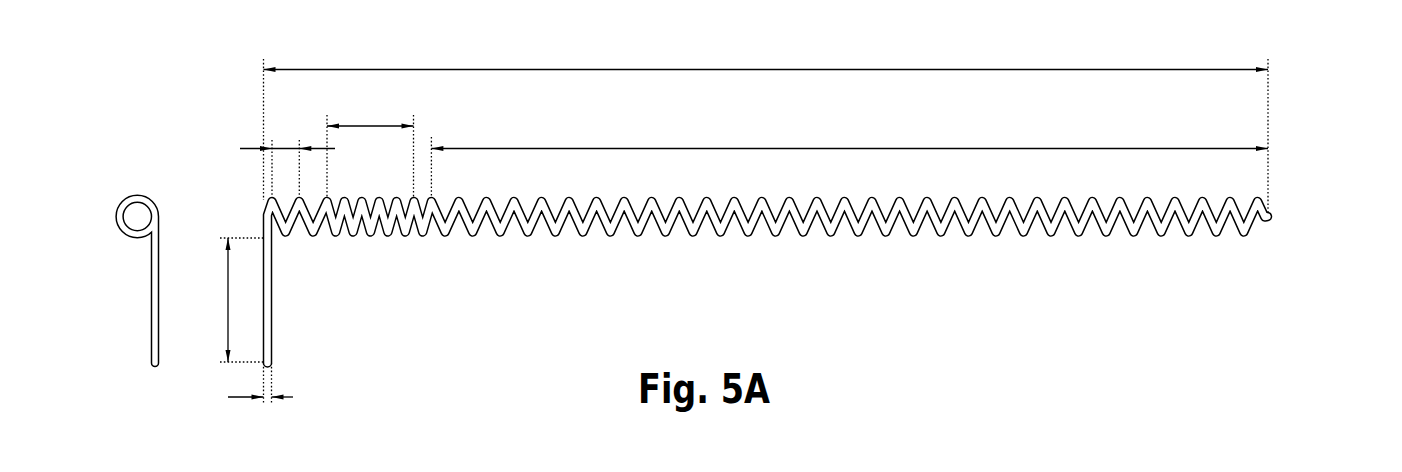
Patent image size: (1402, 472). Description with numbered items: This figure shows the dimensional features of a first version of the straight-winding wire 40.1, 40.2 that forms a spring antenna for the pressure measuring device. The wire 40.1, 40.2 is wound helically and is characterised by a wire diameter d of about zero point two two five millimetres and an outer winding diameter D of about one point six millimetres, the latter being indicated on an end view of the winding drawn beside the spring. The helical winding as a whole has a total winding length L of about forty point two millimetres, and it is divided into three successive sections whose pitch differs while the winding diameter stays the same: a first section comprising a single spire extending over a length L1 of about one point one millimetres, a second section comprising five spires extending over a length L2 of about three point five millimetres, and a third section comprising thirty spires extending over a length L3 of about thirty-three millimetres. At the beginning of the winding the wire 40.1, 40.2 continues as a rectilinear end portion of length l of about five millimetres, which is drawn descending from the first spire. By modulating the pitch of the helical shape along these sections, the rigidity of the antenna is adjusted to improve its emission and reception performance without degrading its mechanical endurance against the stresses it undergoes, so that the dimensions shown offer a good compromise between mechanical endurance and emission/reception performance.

The wire 40.1 is at (1284, 155).
The wire 40.2 is at (831, 231).
The total winding length L is at (766, 55).
The length of the first section L1 is at (287, 134).
The length of the second section L2 is at (370, 111).
The length of the third section L3 is at (849, 134).
The outer winding diameter D is at (120, 194).
The length of the rectilinear end portion l is at (237, 300).
The wire diameter d is at (274, 395).